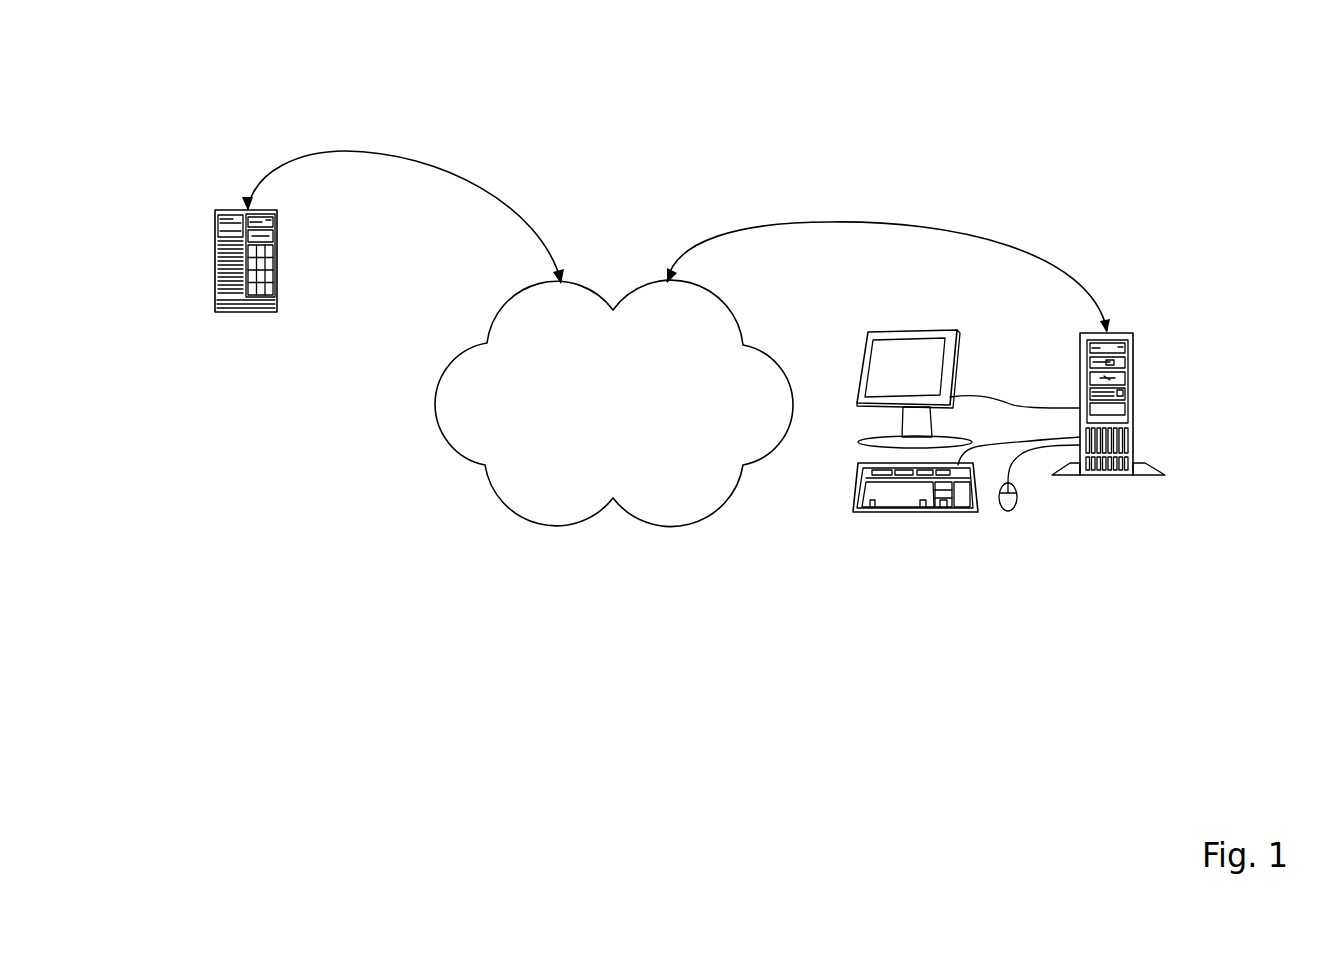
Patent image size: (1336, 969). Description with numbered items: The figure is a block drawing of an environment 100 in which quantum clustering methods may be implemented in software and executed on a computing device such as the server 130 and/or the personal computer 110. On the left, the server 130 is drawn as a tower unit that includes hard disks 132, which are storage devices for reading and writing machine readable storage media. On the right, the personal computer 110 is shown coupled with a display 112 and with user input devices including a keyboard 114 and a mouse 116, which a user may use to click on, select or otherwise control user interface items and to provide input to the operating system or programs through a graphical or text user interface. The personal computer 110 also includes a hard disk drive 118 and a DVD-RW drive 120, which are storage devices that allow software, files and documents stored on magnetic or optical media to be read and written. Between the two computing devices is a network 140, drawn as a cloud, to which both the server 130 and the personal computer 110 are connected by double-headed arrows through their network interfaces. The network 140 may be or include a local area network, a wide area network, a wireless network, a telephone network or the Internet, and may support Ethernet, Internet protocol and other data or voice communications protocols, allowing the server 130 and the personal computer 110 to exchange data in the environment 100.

The environment 100 is at (365, 78).
The server 130 is at (229, 280).
The hard disks 132 is at (300, 256).
The network 140 is at (614, 403).
The personal computer 110 is at (1046, 421).
The display 112 is at (915, 331).
The keyboard 114 is at (887, 512).
The mouse 116 is at (1007, 513).
The hard disk drive 118 is at (1128, 407).
The DVD-RW drive 120 is at (1123, 348).